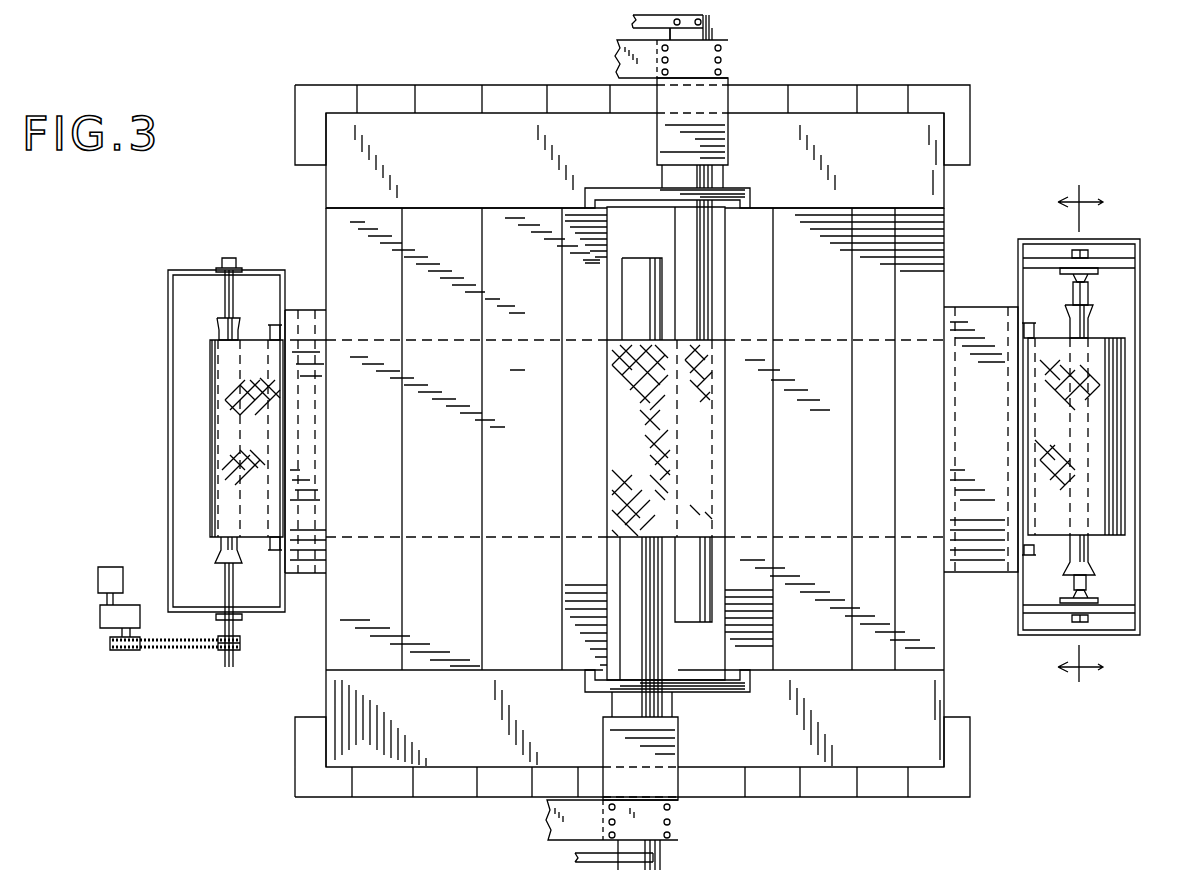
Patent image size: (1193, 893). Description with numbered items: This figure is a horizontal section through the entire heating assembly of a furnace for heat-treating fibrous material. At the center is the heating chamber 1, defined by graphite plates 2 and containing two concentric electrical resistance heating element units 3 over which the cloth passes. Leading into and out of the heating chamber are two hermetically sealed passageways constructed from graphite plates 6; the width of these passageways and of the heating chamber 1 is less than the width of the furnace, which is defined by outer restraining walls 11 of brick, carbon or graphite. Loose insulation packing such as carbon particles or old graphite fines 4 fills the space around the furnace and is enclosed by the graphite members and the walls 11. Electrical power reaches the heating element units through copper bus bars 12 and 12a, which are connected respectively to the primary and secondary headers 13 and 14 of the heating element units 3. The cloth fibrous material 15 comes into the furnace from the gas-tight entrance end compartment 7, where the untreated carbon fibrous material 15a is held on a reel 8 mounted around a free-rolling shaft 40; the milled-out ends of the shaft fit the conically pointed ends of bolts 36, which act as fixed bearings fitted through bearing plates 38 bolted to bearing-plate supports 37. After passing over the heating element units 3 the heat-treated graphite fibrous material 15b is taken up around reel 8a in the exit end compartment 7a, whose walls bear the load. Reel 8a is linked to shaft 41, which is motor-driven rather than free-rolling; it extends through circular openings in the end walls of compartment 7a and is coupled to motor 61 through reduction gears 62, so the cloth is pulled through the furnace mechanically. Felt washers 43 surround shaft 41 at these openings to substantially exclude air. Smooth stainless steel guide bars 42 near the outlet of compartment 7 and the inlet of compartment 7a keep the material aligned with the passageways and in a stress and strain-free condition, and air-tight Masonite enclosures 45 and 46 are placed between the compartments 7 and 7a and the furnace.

The heating chamber 1 is at (645, 228).
The thermally stable structural material 2 is at (612, 188).
The electrical resistance heating unit 3 is at (647, 268).
The graphite fines 4 is at (460, 171).
The graphite plates 6 is at (352, 295).
The closed compartment 7 is at (1118, 562).
The closed compartment 7a is at (180, 348).
The reel 8 is at (1093, 328).
The reel 8a is at (221, 550).
The outer walls 11 is at (456, 94).
The copper bus bar 12 is at (612, 63).
The copper bus bar 12a is at (633, 22).
The primary header 13 is at (728, 60).
The secondary header 14 is at (712, 30).
The cloth fibrous material 15 is at (642, 395).
The carbon fibrous material 15a is at (1125, 396).
The graphite fibrous material 15b is at (210, 425).
The pointed bolts 36 is at (1098, 278).
The bearing-plate supports 37 is at (1108, 270).
The bearing plates 38 is at (1098, 600).
The free-rolling shaft 40 is at (1088, 298).
The shaft 41 is at (225, 302).
The guide means 42 is at (1030, 323).
The washers 43 is at (240, 268).
The air-tight enclosure 45 is at (975, 306).
The air-tight enclosure 46 is at (300, 312).
The motor 61 is at (100, 614).
The reduction gears 62 is at (188, 650).